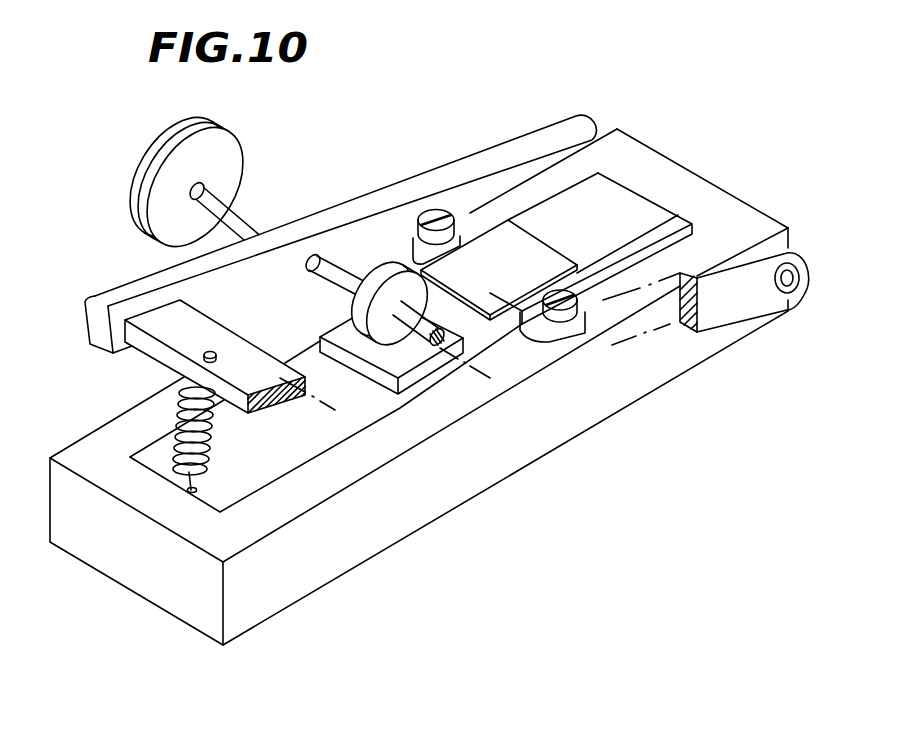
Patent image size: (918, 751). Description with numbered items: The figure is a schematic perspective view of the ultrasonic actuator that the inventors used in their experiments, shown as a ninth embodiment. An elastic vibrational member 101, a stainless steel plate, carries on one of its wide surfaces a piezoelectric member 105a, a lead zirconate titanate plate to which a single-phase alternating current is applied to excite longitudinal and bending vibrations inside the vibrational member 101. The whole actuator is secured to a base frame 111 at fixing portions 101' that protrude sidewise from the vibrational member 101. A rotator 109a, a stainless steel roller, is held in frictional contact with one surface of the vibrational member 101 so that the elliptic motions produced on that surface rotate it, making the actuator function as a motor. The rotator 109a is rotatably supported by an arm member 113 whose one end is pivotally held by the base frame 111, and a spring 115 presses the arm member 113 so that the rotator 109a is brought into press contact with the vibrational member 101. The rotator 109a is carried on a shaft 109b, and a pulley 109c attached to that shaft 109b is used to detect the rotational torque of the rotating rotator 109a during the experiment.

The elastic vibrational member 101 is at (612, 213).
The fixing portions 101' is at (538, 287).
The piezoelectric member 105a is at (517, 247).
The rotator 109a is at (378, 282).
The shaft 109b is at (245, 222).
The pulley 109c is at (140, 170).
The base frame 111 is at (458, 472).
The arm member 113 is at (153, 277).
The spring 115 is at (180, 410).